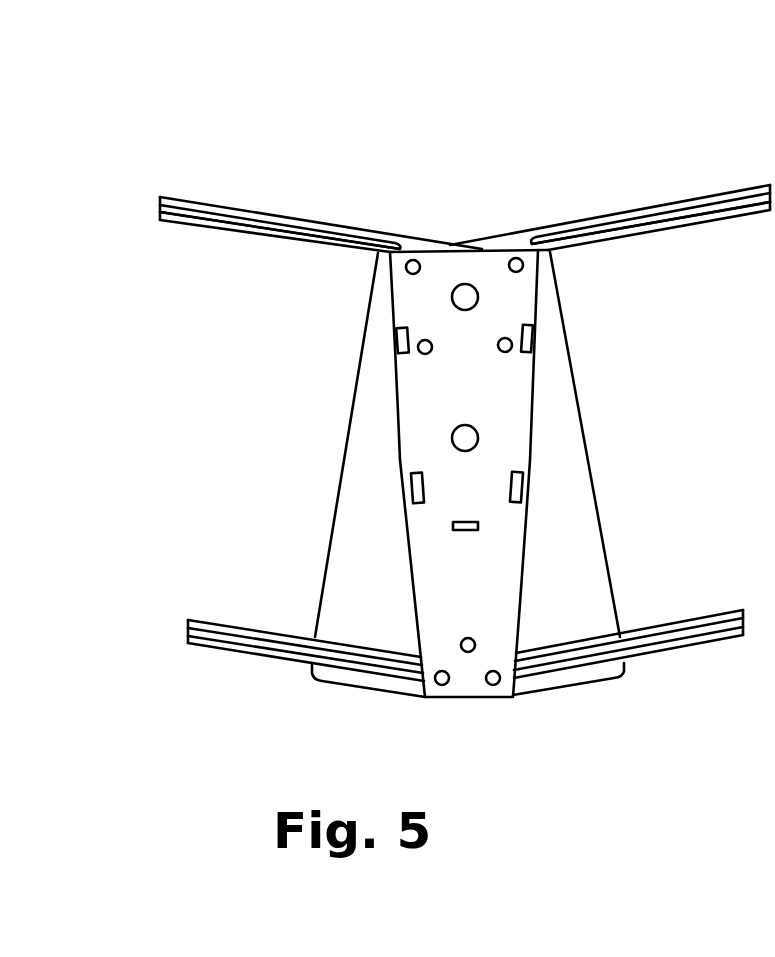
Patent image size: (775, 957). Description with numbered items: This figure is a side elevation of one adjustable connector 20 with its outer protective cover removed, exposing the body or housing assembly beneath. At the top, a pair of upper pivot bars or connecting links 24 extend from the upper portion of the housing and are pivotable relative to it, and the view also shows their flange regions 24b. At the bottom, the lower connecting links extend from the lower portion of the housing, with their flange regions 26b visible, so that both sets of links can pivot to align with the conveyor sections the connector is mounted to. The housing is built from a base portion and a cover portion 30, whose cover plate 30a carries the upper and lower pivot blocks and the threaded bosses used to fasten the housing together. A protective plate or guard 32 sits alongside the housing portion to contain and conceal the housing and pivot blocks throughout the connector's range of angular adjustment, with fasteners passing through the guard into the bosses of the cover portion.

The adjustable connector 20 is at (450, 149).
The upper pivot bars or connecting links 24 is at (307, 219).
The upper rail flange 24b is at (255, 237).
The lower rail flange 26b is at (258, 615).
The cover portion 30 is at (399, 432).
The cover plate 30a is at (520, 402).
The protective plate or guard 32 is at (590, 553).